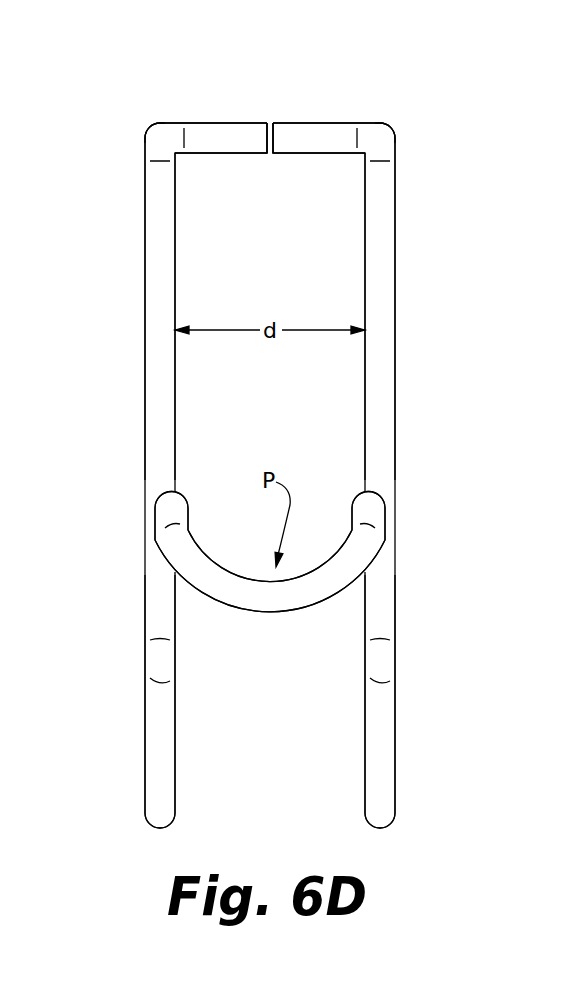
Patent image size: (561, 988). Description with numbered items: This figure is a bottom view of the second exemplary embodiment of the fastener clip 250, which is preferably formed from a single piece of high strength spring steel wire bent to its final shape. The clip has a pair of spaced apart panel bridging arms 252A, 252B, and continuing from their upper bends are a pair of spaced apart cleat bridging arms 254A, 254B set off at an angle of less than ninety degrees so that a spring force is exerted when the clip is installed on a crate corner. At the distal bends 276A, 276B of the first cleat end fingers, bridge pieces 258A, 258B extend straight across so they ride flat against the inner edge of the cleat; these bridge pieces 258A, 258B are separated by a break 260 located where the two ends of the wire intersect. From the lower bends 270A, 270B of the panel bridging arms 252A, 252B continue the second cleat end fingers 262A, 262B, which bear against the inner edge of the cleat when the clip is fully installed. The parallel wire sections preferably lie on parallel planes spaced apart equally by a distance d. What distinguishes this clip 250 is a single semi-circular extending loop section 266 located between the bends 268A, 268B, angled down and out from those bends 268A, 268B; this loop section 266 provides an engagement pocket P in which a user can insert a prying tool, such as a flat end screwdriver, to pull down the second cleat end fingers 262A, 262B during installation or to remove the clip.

The fastener clip 250 is at (460, 339).
The panel bridging arm 252A is at (382, 768).
The panel bridging arm 252B is at (160, 768).
The cleat bridging arm 254A is at (380, 250).
The cleat bridging arm 254B is at (160, 250).
The bridge piece 258A is at (318, 138).
The bridge piece 258B is at (222, 138).
The break 260 is at (271, 165).
The second cleat end finger 262A is at (382, 598).
The second cleat end finger 262B is at (160, 598).
The single semi-circular extending loop section 266 is at (272, 598).
The second cleat end finger bend 268A is at (377, 506).
The second cleat end finger bend 268B is at (163, 506).
The lower bend 270A is at (382, 668).
The lower bend 270B is at (160, 668).
The distal bend 276A is at (382, 136).
The distal bend 276B is at (158, 136).